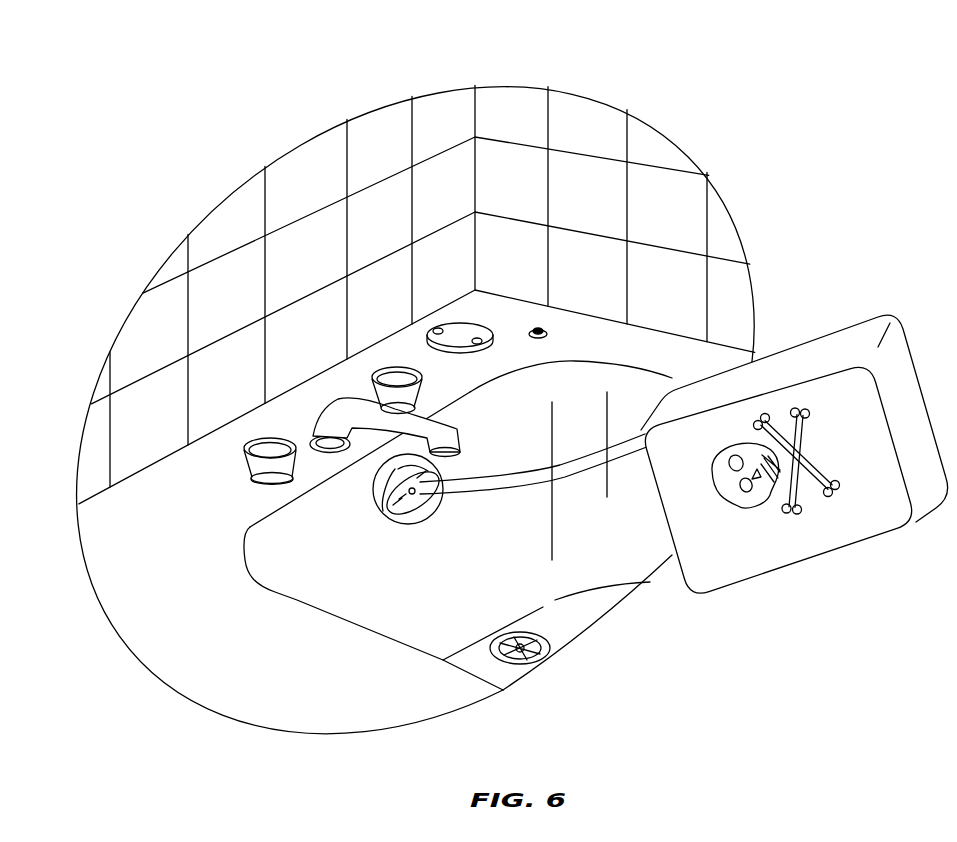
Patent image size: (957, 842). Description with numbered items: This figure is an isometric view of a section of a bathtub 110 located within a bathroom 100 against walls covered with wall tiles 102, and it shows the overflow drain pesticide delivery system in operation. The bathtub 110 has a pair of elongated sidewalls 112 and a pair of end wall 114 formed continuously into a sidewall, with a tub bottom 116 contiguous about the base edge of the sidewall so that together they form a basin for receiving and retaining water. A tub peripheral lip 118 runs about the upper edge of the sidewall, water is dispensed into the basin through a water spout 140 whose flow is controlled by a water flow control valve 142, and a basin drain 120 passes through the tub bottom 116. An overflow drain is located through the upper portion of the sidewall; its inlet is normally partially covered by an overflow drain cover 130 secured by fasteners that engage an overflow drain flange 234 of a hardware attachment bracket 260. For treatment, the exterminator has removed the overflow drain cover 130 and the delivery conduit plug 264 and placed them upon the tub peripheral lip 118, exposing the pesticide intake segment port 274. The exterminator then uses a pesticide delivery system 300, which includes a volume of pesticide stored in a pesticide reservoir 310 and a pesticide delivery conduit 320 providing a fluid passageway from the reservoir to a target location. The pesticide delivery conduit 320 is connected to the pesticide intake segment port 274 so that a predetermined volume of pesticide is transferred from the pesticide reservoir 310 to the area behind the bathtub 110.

The bathroom 100 is at (752, 108).
The wall tiles 102 is at (310, 180).
The bathtub 110 is at (298, 561).
The elongated sidewalls 112 is at (638, 480).
The end wall 114 is at (352, 542).
The tub bottom 116 is at (582, 615).
The tub peripheral lip 118 is at (498, 307).
The basin drain 120 is at (521, 636).
The overflow drain cover 130 is at (457, 330).
The water spout 140 is at (390, 414).
The water flow control valve 142 is at (268, 443).
The overflow drain flange 234 is at (418, 514).
The hardware attachment bracket 260 is at (428, 500).
The delivery conduit plug 264 is at (547, 327).
The pesticide intake segment port 274 is at (430, 475).
The pesticide delivery system 300 is at (794, 436).
The pesticide reservoir 310 is at (786, 547).
The pesticide delivery conduit 320 is at (532, 487).